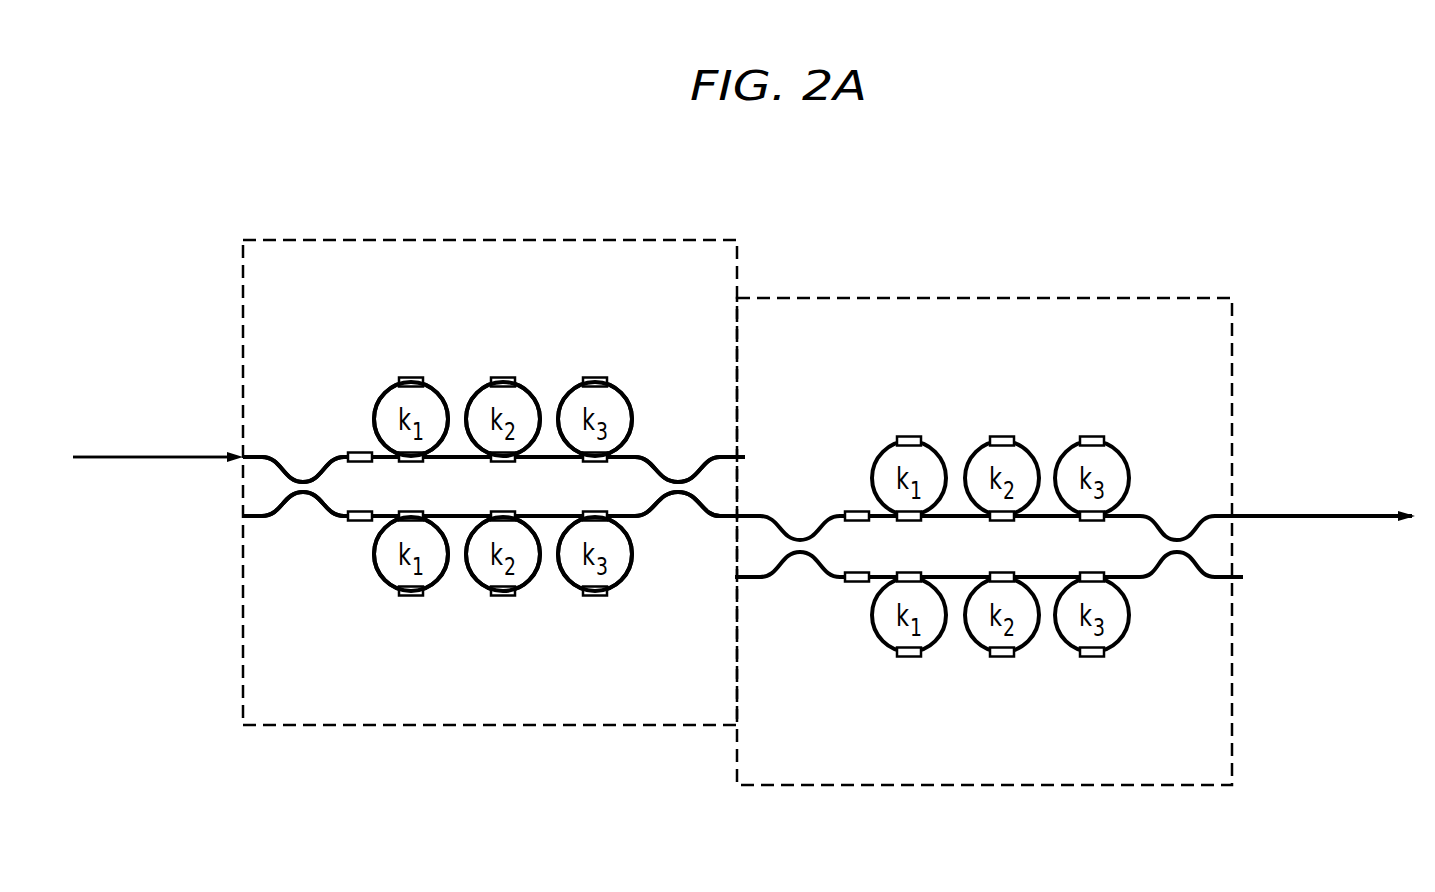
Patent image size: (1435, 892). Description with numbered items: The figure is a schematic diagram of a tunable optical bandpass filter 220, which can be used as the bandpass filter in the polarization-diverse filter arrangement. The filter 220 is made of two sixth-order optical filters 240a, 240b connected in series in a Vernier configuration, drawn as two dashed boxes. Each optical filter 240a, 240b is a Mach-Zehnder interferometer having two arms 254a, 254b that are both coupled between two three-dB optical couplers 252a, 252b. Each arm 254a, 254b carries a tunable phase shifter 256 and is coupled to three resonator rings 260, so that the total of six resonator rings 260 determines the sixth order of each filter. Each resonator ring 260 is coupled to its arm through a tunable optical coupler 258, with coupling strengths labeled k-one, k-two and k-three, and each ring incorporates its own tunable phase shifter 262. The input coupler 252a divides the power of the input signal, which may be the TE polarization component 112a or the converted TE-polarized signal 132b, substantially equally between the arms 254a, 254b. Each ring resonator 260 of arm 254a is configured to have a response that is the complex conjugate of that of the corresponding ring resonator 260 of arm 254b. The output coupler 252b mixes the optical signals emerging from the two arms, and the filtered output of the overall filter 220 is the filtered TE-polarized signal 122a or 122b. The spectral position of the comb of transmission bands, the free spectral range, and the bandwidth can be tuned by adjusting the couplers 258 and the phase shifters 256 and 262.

The tunable optical bandpass filter 220 is at (793, 165).
The TE polarization component 112a is at (148, 462).
The TE-polarized signal 132b is at (154, 485).
The filtered TE-polarized signal 122a is at (1320, 518).
The filtered TE-polarized signal 122b is at (1313, 544).
The sixth-order optical filter 240a is at (493, 240).
The sixth-order optical filter 240b is at (988, 298).
The 3-dB optical coupler 252a is at (302, 522).
The 3-dB optical coupler 252b is at (679, 528).
The arm 254a is at (352, 563).
The arm 254b is at (356, 396).
The tunable phase shifter 256 is at (353, 452).
The tunable optical coupler 258 is at (411, 462).
The resonator ring 260 is at (428, 388).
The tunable phase shifter 262 is at (408, 377).